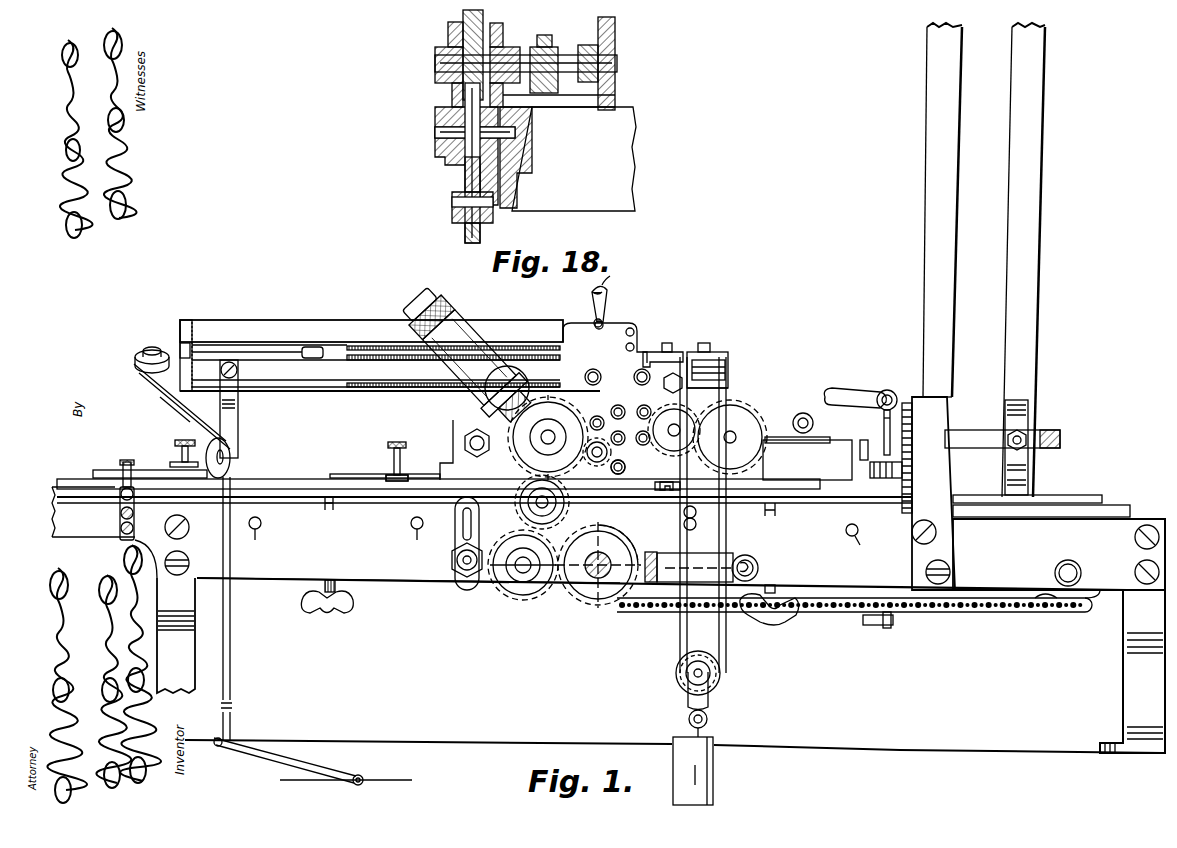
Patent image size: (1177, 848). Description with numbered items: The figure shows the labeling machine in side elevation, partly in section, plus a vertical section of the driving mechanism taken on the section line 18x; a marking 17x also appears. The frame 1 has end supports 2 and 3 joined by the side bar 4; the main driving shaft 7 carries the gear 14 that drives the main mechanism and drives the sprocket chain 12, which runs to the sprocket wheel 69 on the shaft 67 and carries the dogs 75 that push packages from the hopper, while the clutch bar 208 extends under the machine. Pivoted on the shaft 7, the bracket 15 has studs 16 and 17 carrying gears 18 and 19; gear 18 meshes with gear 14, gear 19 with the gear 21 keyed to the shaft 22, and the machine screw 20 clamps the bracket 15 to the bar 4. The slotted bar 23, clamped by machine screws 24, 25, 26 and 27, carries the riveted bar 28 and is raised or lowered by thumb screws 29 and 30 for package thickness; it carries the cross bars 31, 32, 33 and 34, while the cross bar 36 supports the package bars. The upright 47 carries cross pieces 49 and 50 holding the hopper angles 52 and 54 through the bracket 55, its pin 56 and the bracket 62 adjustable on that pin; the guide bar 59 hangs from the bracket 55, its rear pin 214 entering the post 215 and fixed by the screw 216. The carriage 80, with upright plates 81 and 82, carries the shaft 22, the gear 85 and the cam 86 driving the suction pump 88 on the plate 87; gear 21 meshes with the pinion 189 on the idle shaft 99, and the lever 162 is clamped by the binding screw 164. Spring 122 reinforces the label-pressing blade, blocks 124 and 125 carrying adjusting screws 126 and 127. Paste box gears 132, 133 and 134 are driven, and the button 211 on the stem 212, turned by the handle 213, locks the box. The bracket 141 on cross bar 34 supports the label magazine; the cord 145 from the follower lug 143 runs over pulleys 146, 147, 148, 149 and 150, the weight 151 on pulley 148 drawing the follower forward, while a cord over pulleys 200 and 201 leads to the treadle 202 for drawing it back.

In FIG. 1, the frame 1 is at (992, 574).
In FIG. 1, the end piece or support 2 is at (1123, 660).
In FIG. 1, the end piece or support 3 is at (190, 657).
In FIG. 1, the bar 4 is at (283, 570).
In FIG. 1, the main driving shaft 7 is at (592, 580).
In FIG. 1, the sprocket chain 12 is at (1030, 614).
In FIG. 1, the gear 14 is at (636, 548).
In FIG. 18, the bracket 15 is at (510, 212).
In FIG. 1, the bracket 15 is at (466, 575).
In FIG. 18, the stud 16 is at (452, 205).
In FIG. 1, the stud 16 is at (522, 575).
In FIG. 18, the stud 17 is at (435, 132).
In FIG. 1, the stud 17 is at (565, 500).
In FIG. 1, the shaft end 17x is at (420, 540).
In FIG. 18, the gear 18 is at (465, 238).
In FIG. 1, the gear 18 is at (536, 580).
In FIG. 1, the section line 18x is at (548, 400).
In FIG. 18, the gear 19 is at (447, 163).
In FIG. 1, the gear 19 is at (516, 456).
In FIG. 1, the machine screw 20 is at (455, 575).
In FIG. 18, the gear 21 is at (450, 92).
In FIG. 1, the gear 21 is at (598, 440).
In FIG. 18, the shaft 22 is at (435, 63).
In FIG. 1, the shaft 22 is at (550, 430).
In FIG. 1, the bar 23 is at (372, 504).
In FIG. 1, the machine screw 24 is at (256, 538).
In FIG. 1, the machine screw 25 is at (422, 536).
In FIG. 1, the machine screw 26 is at (698, 529).
In FIG. 1, the machine screw 27 is at (860, 542).
In FIG. 1, the bar 28 is at (818, 492).
In FIG. 1, the thumb screw 29 is at (327, 612).
In FIG. 1, the thumb screw 30 is at (785, 622).
In FIG. 1, the cross bar 31 is at (880, 478).
In FIG. 1, the cross bar 32 is at (657, 486).
In FIG. 1, the cross bar 33 is at (438, 458).
In FIG. 1, the cross bar 34 is at (390, 428).
In FIG. 1, the cross bar 36 is at (1118, 510).
In FIG. 1, the upright 47 is at (952, 543).
In FIG. 1, the cross piece 49 is at (902, 405).
In FIG. 1, the cross piece 50 is at (912, 475).
In FIG. 1, the upright angle 52 is at (925, 293).
In FIG. 1, the upright angle 54 is at (1028, 322).
In FIG. 1, the bracket 55 is at (945, 400).
In FIG. 1, the pin 56 is at (1045, 430).
In FIG. 1, the guide bar 59 is at (1068, 495).
In FIG. 1, the bracket 62 is at (1028, 402).
In FIG. 1, the shaft 67 is at (1077, 565).
In FIG. 1, the sprocket wheel 69 is at (1074, 613).
In FIG. 1, the dog 75 is at (880, 628).
In FIG. 1, the carriage 80 is at (620, 330).
In FIG. 18, the upright plate 81 is at (483, 24).
In FIG. 18, the upright plate 82 is at (615, 32).
In FIG. 18, the gear 85 is at (520, 42).
In FIG. 18, the cam 86 is at (548, 92).
In FIG. 1, the plate 87 is at (462, 420).
In FIG. 1, the suction pump 88 is at (470, 335).
In FIG. 1, the shaft 99 is at (618, 421).
In FIG. 1, the spring 122 is at (375, 475).
In FIG. 1, the block 124 is at (390, 476).
In FIG. 1, the block 125 is at (176, 464).
In FIG. 1, the adjusting screw 126 is at (397, 442).
In FIG. 1, the adjusting screw 127 is at (180, 420).
In FIG. 1, the driving gear 132 is at (767, 430).
In FIG. 1, the driving gear 133 is at (730, 403).
In FIG. 1, the driving gear 134 is at (660, 484).
In FIG. 1, the bracket 141 is at (240, 420).
In FIG. 1, the lug 143 is at (310, 358).
In FIG. 1, the cord 145 is at (370, 360).
In FIG. 1, the pulley 146 is at (712, 352).
In FIG. 1, the pulley 147 is at (728, 380).
In FIG. 1, the pulley 148 is at (710, 690).
In FIG. 1, the pulley 149 is at (672, 386).
In FIG. 1, the pulley 150 is at (652, 352).
In FIG. 1, the weight 151 is at (713, 778).
In FIG. 1, the lever 162 is at (590, 300).
In FIG. 1, the binding screw 164 is at (608, 306).
In FIG. 1, the pinion 189 is at (599, 472).
In FIG. 1, the pulley 200 is at (148, 350).
In FIG. 1, the pulley 201 is at (232, 455).
In FIG. 1, the treadle 202 is at (300, 752).
In FIG. 1, the bar 208 is at (758, 552).
In FIG. 1, the button 211 is at (864, 446).
In FIG. 1, the stem 212 is at (884, 417).
In FIG. 1, the handle 213 is at (845, 386).
In FIG. 1, the pin 214 is at (118, 490).
In FIG. 1, the post 215 is at (120, 515).
In FIG. 1, the screw 216 is at (127, 460).